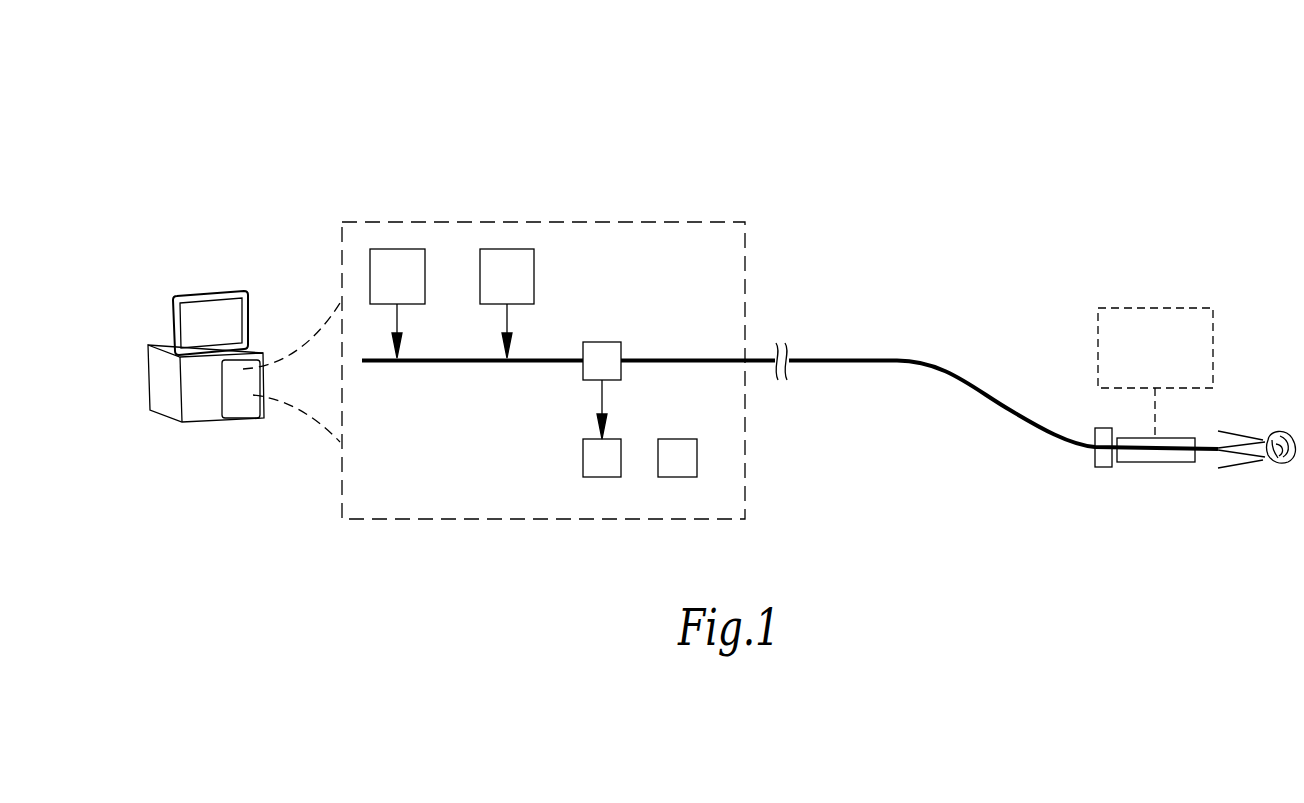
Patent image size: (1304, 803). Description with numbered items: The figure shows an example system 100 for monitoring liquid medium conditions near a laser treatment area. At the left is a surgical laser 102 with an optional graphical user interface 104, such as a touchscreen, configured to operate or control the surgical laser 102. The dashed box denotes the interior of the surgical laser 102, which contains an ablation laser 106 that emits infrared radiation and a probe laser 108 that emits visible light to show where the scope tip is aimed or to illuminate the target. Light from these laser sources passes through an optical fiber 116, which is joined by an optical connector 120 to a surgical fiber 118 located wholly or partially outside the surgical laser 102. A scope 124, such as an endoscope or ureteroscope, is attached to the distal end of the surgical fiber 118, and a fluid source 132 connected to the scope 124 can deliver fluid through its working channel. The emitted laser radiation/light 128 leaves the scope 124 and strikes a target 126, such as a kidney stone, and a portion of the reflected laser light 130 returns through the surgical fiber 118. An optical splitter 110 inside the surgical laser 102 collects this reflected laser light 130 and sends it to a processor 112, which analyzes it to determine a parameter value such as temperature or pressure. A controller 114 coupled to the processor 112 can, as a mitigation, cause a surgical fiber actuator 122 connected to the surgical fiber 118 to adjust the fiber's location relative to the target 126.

The system 100 is at (1112, 77).
The surgical laser 102 is at (165, 377).
The graphical user interface 104 is at (209, 292).
The ablation laser 106 is at (397, 249).
The probe laser 108 is at (507, 249).
The optical splitter 110 is at (602, 342).
The processor 112 is at (583, 450).
The controller 114 is at (697, 452).
The optical fiber 116 is at (455, 367).
The surgical fiber 118 is at (958, 378).
The optical connector 120 is at (783, 340).
The surgical fiber actuator 122 is at (1105, 470).
The scope 124 is at (1155, 462).
The target 126 is at (1283, 466).
The emitted laser radiation/light 128 is at (1250, 437).
The reflected laser light 130 is at (1235, 468).
The fluid source 132 is at (1157, 305).